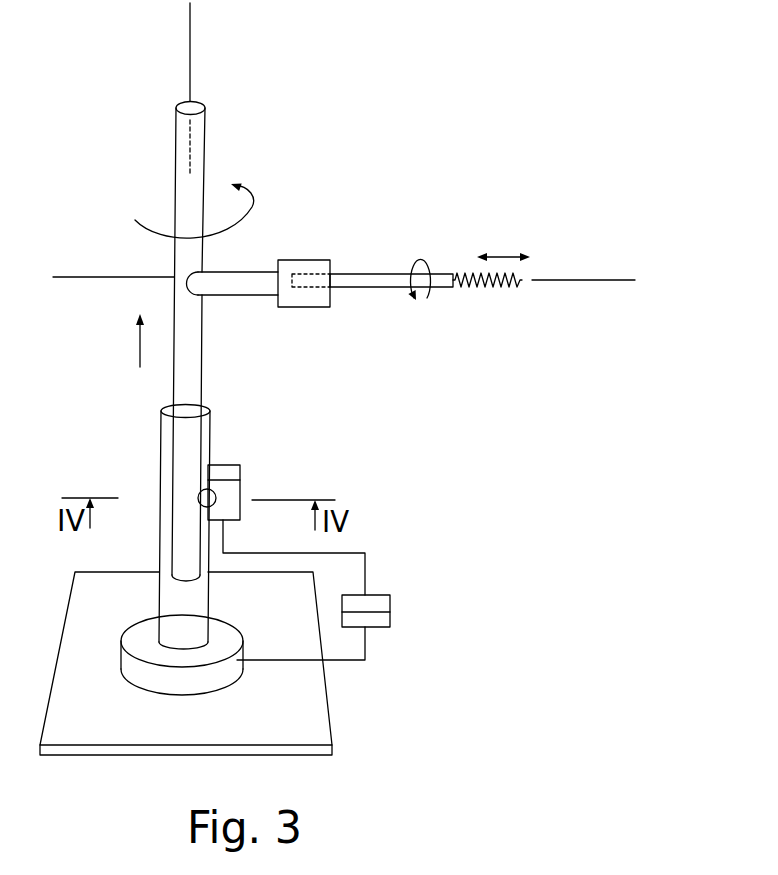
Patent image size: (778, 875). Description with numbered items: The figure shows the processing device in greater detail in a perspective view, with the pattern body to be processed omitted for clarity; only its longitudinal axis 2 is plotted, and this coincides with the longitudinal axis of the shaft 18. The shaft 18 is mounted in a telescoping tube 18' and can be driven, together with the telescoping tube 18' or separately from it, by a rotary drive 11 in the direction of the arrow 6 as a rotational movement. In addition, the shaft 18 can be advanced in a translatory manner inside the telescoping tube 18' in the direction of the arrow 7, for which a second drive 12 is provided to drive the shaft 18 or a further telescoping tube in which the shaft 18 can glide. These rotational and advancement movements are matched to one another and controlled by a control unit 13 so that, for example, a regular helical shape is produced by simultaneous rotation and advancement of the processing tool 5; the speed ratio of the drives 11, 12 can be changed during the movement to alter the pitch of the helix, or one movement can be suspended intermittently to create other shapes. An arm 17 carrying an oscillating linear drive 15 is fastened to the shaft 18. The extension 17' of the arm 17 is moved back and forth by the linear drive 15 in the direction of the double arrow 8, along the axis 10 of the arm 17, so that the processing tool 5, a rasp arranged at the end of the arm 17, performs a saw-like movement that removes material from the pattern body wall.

The longitudinal axis 2 is at (192, 60).
The shaft 18 is at (142, 342).
The arrow 6 is at (256, 211).
The axis 10 is at (603, 278).
The arm 17 is at (239, 326).
The oscillating linear drive 15 is at (303, 308).
The extension 17' is at (391, 235).
The processing tool 5 is at (495, 290).
The double arrow 8 is at (502, 253).
The arrow 7 is at (137, 348).
The telescoping tube 18' is at (136, 527).
The second drive 12 is at (240, 474).
The control unit 13 is at (390, 612).
The rotary drive 11 is at (172, 697).